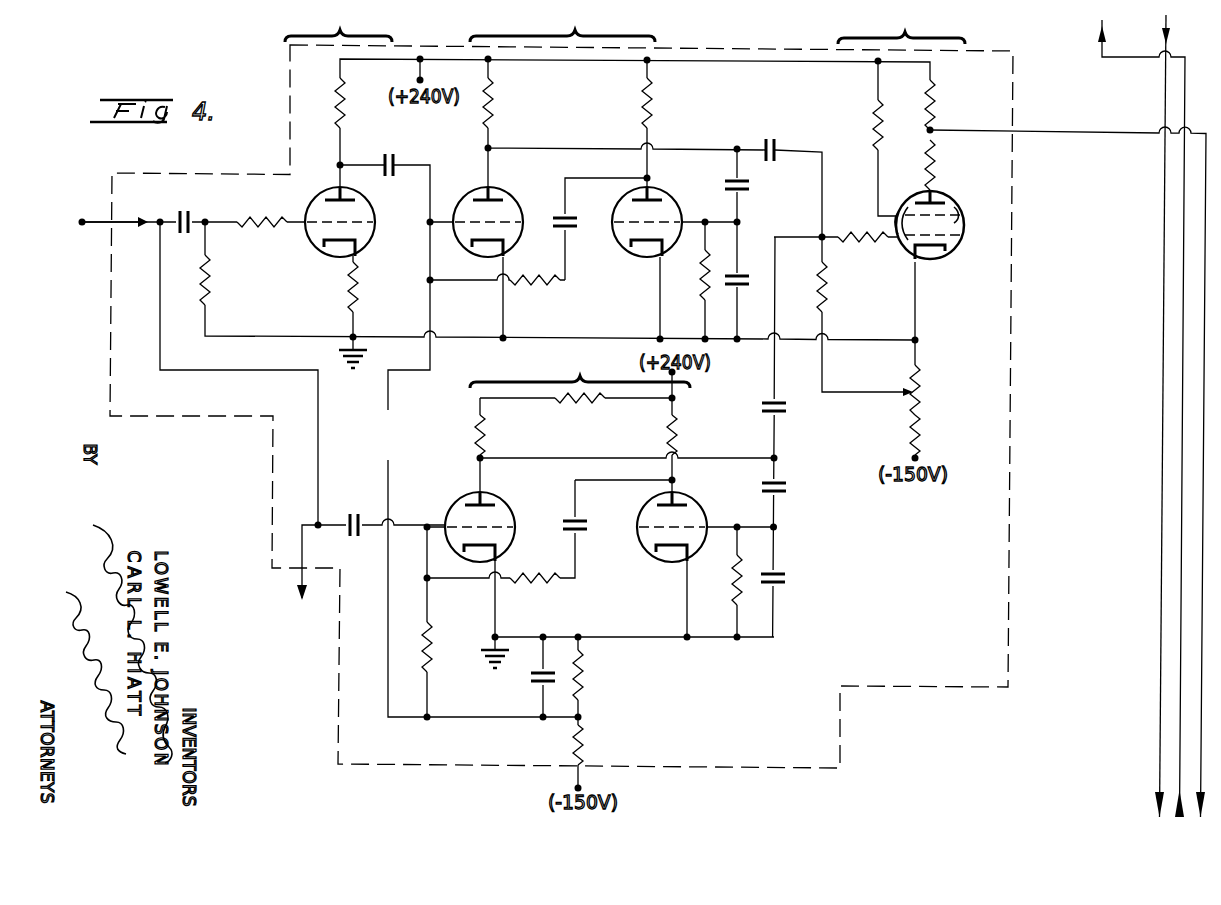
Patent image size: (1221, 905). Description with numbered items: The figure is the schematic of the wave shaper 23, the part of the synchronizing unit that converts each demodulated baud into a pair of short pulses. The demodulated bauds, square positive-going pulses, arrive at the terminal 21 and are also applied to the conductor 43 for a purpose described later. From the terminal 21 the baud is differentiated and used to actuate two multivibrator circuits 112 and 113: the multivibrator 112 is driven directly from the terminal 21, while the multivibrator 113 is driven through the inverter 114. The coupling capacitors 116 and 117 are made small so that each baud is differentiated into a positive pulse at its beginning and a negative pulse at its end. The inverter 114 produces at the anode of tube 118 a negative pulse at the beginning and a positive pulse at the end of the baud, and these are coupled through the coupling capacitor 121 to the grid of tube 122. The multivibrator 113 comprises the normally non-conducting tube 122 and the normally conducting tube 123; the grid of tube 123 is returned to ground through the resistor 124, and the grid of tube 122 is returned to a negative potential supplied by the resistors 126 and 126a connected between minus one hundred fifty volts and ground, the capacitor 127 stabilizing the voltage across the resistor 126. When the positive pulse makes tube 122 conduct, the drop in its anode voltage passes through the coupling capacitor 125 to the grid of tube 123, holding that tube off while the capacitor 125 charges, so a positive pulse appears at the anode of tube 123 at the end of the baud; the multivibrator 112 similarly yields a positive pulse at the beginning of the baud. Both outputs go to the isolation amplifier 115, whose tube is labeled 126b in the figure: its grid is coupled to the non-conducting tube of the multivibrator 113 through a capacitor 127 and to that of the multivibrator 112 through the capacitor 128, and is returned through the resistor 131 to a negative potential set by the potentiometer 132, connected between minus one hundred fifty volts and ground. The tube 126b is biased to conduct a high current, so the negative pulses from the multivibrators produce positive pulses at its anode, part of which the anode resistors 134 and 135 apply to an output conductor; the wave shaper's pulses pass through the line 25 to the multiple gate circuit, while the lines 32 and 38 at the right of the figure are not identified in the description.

The terminal 21 is at (90, 204).
The wave shaper 23 is at (1010, 507).
The line 25 is at (1200, 620).
The conductor 32 is at (1161, 728).
The conductor 38 is at (1120, 60).
The conductor 43 is at (299, 589).
The multivibrator 112 is at (580, 368).
The multivibrator 113 is at (562, 26).
The inverter 114 is at (338, 25).
The isolation amplifier 115 is at (901, 30).
The coupling capacitor 116 is at (190, 216).
The coupling capacitor 117 is at (367, 508).
The tube 118 is at (334, 256).
The coupling capacitor 121 is at (394, 163).
The tube 122 is at (509, 250).
The tube 123 is at (647, 261).
The resistor 124 is at (703, 271).
The coupling capacitor 125 is at (753, 232).
The resistor 126 is at (581, 694).
The resistor 126a is at (580, 748).
The tube 126b is at (950, 224).
The capacitor 127 is at (774, 148).
The capacitor 128 is at (772, 403).
The resistor 131 is at (822, 288).
The potentiometer 132 is at (939, 410).
The anode resistor 134 is at (932, 110).
The anode resistor 135 is at (951, 165).